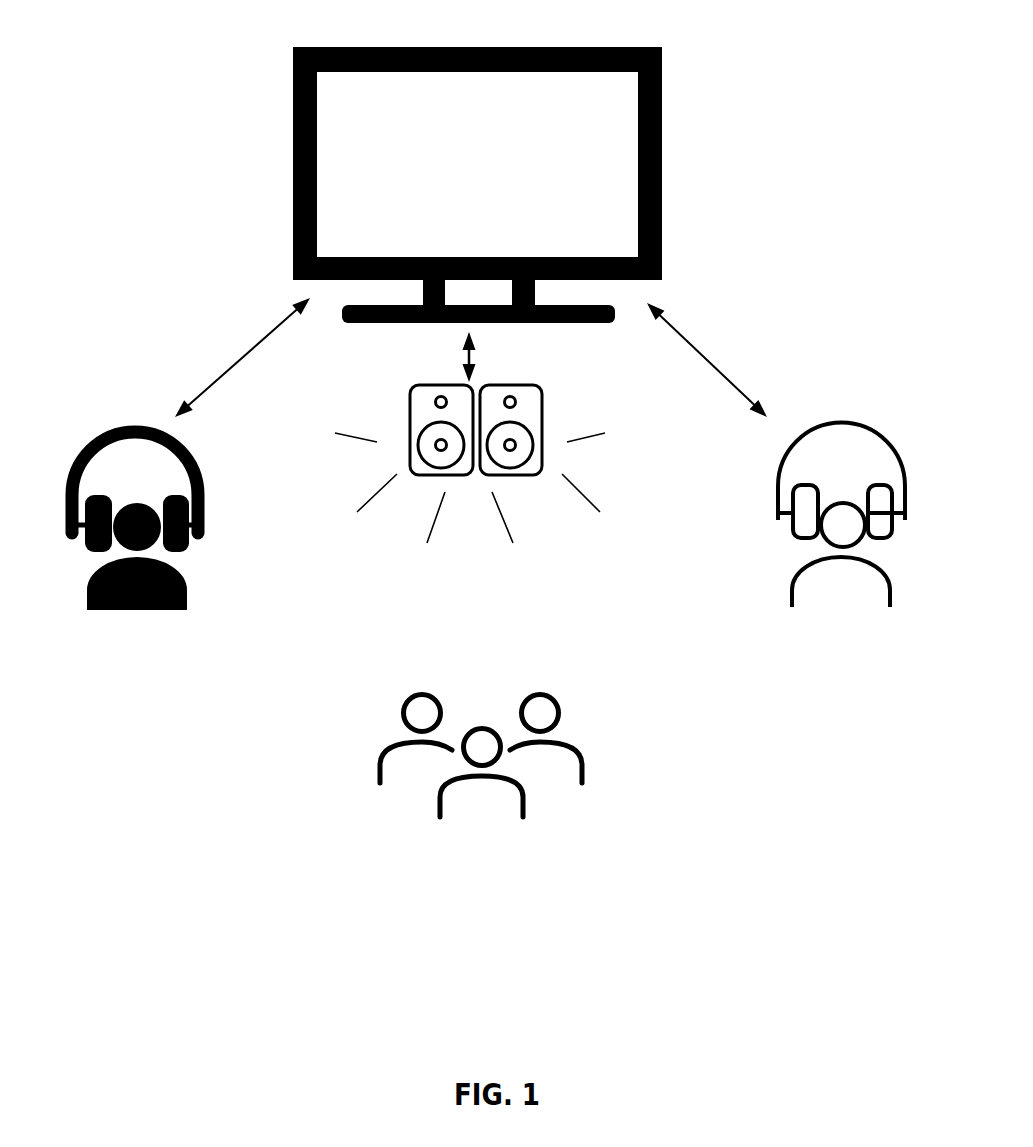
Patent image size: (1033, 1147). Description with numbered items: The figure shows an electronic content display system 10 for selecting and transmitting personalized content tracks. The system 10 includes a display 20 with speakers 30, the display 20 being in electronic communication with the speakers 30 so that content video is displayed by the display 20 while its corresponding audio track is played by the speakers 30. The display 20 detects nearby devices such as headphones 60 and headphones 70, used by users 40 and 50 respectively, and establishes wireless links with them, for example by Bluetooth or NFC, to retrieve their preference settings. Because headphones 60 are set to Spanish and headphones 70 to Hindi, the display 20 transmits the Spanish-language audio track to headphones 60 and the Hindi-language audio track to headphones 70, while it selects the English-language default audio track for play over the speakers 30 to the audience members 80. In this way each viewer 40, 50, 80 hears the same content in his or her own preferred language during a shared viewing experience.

The electronic content display system 10 is at (181, 75).
The display 20 is at (663, 167).
The speakers 30 is at (542, 390).
The user 40 is at (192, 592).
The user 50 is at (890, 582).
The headphones 60 is at (207, 493).
The headphones 70 is at (905, 483).
The audience members 80 is at (583, 770).